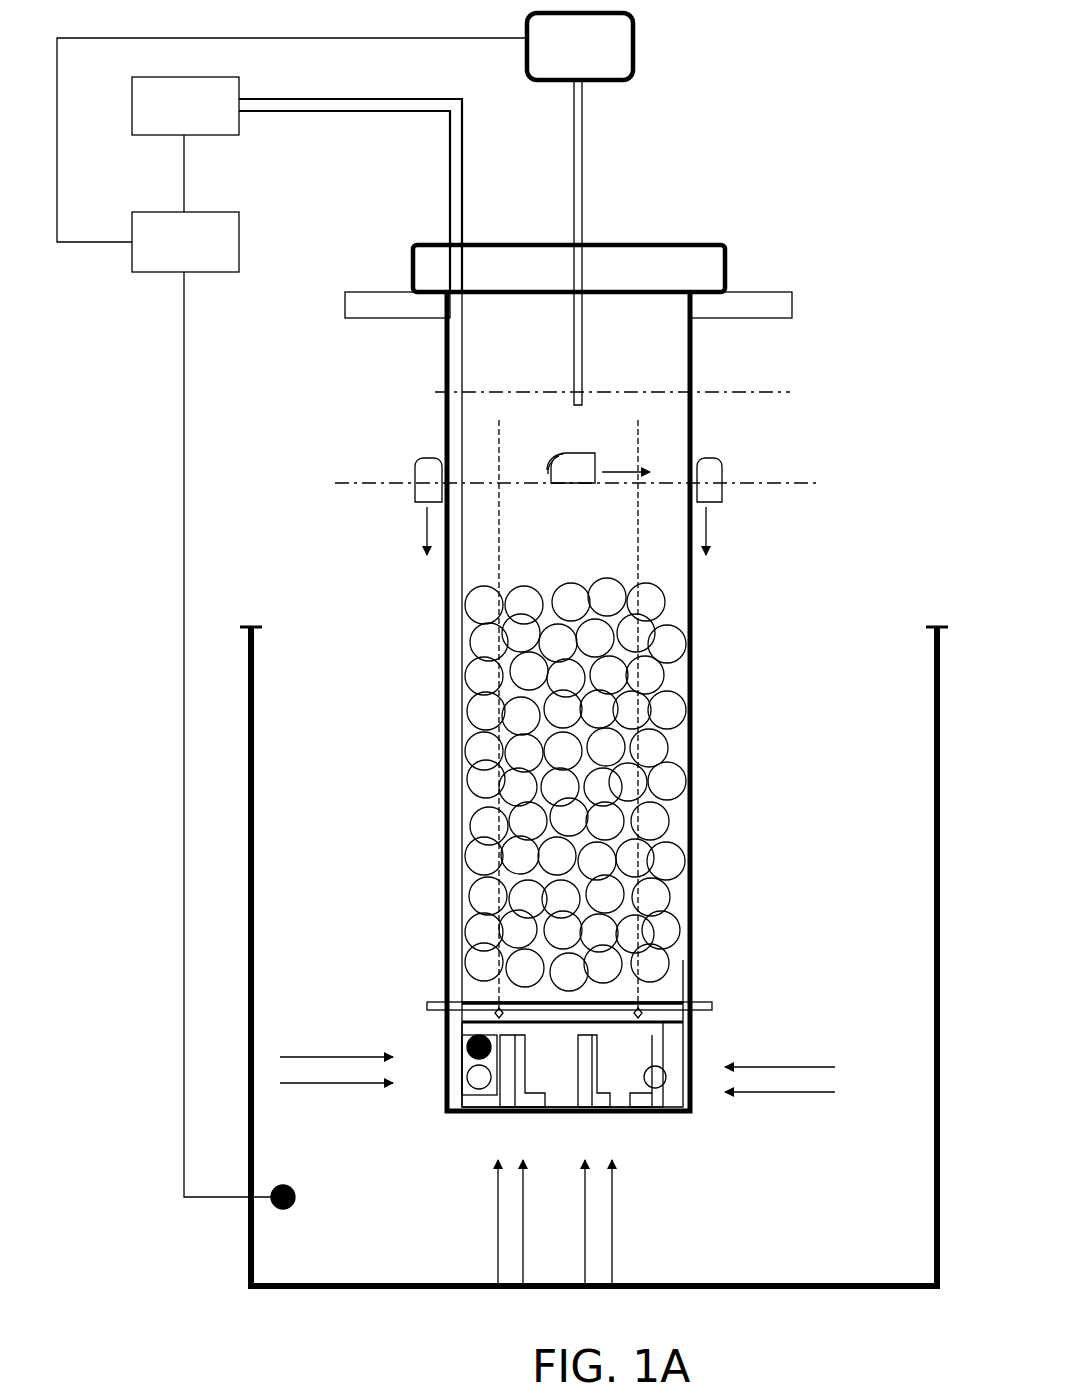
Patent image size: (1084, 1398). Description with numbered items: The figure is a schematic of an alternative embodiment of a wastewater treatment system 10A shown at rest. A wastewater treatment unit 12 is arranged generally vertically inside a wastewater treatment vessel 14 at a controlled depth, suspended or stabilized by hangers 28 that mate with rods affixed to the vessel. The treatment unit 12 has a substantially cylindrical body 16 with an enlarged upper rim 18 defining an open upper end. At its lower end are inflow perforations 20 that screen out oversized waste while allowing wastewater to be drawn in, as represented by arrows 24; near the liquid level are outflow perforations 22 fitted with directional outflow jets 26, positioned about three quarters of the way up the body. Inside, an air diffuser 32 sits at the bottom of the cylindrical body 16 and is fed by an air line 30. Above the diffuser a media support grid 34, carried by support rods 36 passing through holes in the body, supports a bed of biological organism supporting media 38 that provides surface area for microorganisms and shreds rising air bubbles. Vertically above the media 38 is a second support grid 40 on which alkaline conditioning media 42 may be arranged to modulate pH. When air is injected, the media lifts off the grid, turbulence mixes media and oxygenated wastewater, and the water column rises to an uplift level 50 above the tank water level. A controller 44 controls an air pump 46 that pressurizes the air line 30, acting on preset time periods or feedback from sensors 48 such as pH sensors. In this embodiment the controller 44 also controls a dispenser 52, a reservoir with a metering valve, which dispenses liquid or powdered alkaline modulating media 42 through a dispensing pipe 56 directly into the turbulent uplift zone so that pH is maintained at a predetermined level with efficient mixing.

The wastewater treatment system 10A is at (712, 100).
The wastewater treatment unit 12 is at (445, 728).
The wastewater treatment vessel 14 is at (256, 768).
The cylindrical body 16 is at (692, 752).
The enlarged upper rim 18 is at (725, 268).
The inflow perforations 20 is at (667, 1085).
The outflow perforations 22 is at (688, 468).
The arrows 24 is at (285, 1057).
The directional outflow jets 26 is at (722, 498).
The hangers 28 is at (362, 318).
The air line 30 is at (450, 165).
The air diffuser 32 is at (665, 1055).
The media support grid 34 is at (712, 1003).
The support rods 36 is at (458, 995).
The biological organism supporting media 38 is at (690, 855).
The second support grid 40 is at (446, 408).
The alkaline conditioning media 42 is at (345, 127).
The controller 44 is at (162, 212).
The air pump 46 is at (235, 136).
The sensors 48 is at (468, 1045).
The uplift level 50 is at (742, 394).
The dispenser 52 is at (636, 20).
The dispensing pipe 56 is at (583, 178).